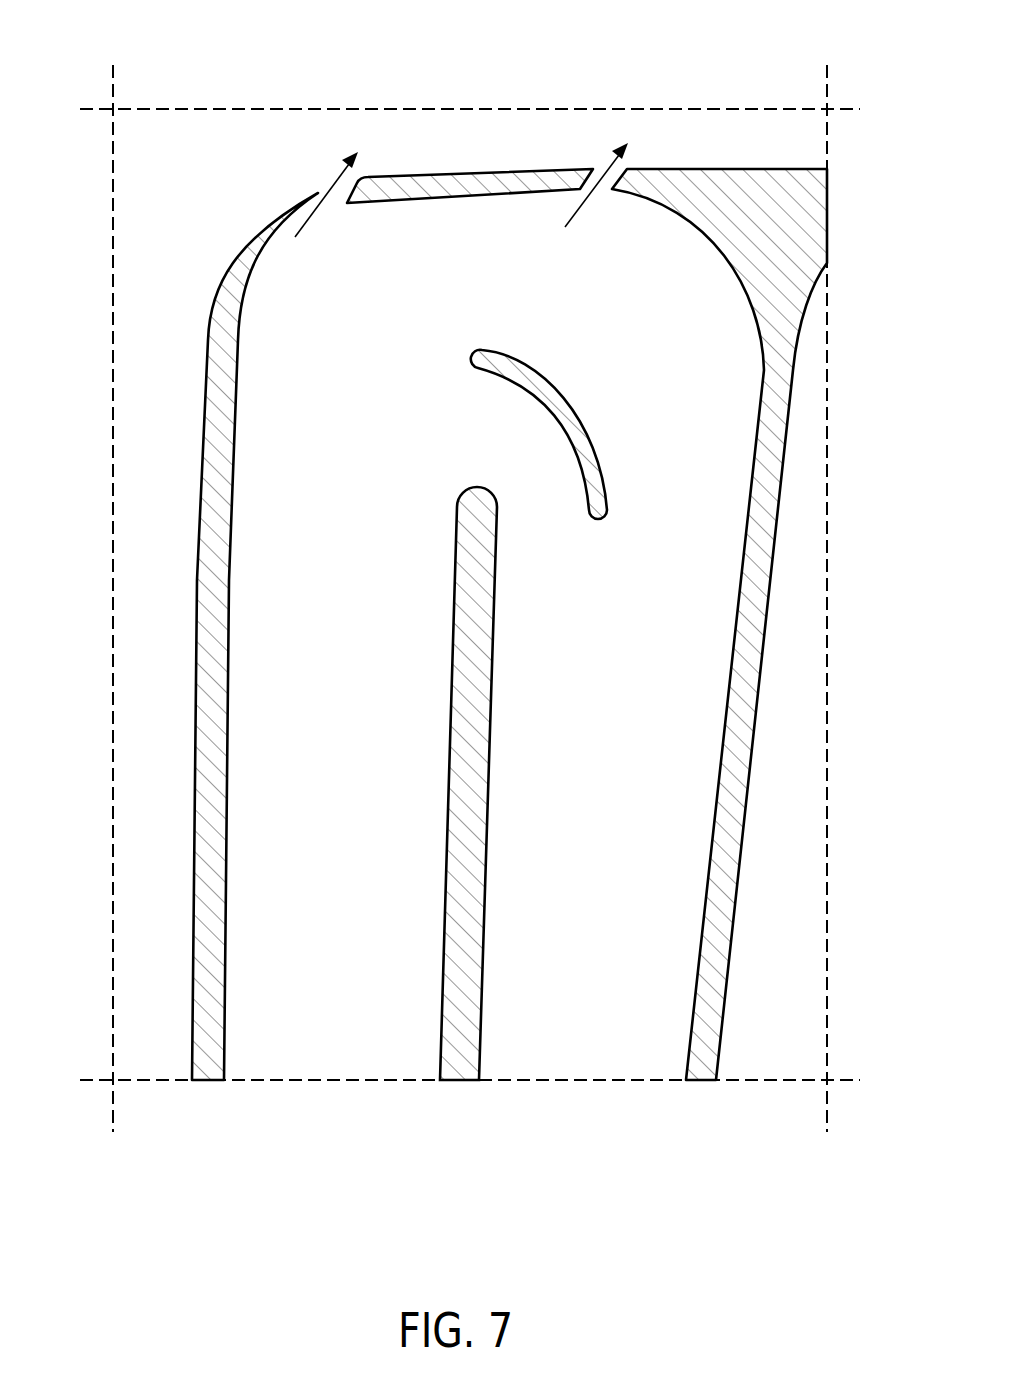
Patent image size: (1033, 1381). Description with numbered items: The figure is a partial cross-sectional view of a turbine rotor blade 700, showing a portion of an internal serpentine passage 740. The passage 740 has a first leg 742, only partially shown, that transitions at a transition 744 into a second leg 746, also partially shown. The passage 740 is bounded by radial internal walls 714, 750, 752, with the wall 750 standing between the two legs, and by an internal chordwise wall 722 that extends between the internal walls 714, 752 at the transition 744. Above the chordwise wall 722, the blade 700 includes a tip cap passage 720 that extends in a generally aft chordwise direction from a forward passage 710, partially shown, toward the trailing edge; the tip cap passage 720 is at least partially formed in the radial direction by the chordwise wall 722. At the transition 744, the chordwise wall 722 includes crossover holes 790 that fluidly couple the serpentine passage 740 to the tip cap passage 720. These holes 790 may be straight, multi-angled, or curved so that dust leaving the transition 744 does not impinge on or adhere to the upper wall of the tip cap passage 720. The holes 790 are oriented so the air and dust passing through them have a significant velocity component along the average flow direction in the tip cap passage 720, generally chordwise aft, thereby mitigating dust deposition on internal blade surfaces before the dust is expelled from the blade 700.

The rotor blade 700 is at (82, 95).
The forward passage 710 is at (132, 543).
The radial internal wall 714 is at (218, 668).
The tip cap passage 720 is at (395, 127).
The internal chordwise wall 722 is at (461, 182).
The serpentine passage 740 is at (300, 1110).
The first leg 742 is at (325, 838).
The transition 744 is at (452, 308).
The second leg 746 is at (632, 852).
The radial internal wall 750 is at (457, 1074).
The radial internal wall 752 is at (732, 937).
The crossover holes 790 is at (316, 190).